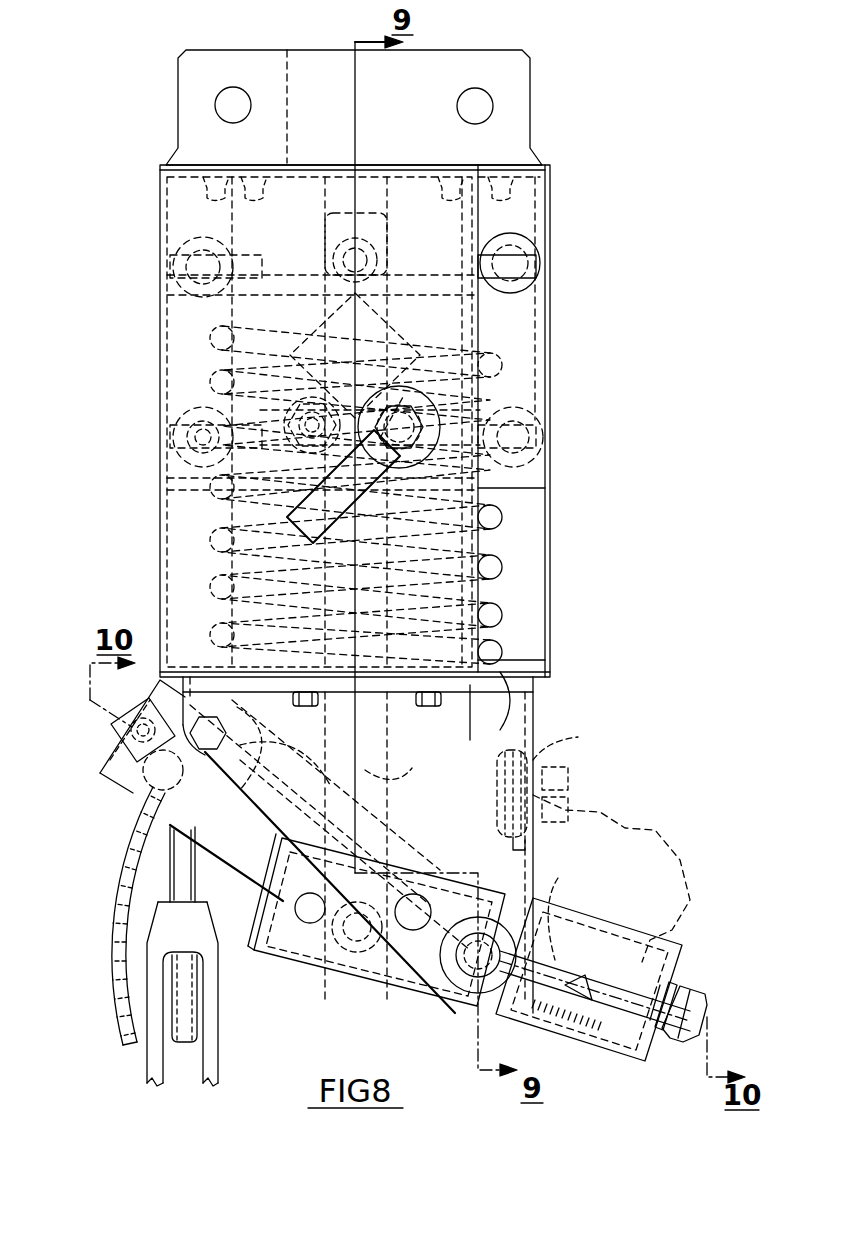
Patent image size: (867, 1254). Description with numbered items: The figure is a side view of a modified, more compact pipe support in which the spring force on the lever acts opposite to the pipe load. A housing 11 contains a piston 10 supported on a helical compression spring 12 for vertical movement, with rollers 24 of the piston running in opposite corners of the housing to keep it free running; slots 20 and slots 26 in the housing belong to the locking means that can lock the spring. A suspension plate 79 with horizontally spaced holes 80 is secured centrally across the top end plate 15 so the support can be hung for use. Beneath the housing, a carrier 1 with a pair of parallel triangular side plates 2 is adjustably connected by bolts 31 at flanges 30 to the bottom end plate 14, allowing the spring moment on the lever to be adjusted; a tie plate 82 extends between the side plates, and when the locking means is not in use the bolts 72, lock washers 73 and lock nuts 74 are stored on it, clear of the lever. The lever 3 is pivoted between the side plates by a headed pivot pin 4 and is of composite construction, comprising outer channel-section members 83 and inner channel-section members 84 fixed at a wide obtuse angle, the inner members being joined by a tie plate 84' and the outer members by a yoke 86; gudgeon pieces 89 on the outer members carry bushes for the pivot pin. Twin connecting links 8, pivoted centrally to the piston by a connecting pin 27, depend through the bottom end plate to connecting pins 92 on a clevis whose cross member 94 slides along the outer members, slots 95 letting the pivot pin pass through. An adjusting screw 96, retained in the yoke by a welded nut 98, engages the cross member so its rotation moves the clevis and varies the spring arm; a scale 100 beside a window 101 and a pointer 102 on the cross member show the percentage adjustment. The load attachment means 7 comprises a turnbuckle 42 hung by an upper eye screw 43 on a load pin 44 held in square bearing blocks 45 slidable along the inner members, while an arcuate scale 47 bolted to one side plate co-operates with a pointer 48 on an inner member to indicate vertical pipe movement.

The carrier 1 is at (548, 710).
The side plates 2 is at (447, 747).
The lever 3 is at (132, 818).
The pivot pin 4 is at (452, 1010).
The load attachment means 7 is at (128, 950).
The connecting links 8 is at (399, 763).
The piston 10 is at (515, 348).
The housing 11 is at (552, 545).
The helical compression spring 12 is at (492, 652).
The bottom end plate 14 is at (497, 706).
The top end plate 15 is at (530, 173).
The slots 20 is at (283, 520).
The rollers 24 is at (178, 266).
The slots 26 is at (252, 372).
The connecting pin 27 is at (378, 258).
The flanges 30 is at (475, 690).
The bolts 31 is at (318, 700).
The turnbuckle 42 is at (220, 982).
The upper eye screw 43 is at (183, 870).
The load pin 44 is at (105, 783).
The square bearing blocks 45 is at (270, 760).
The arcuate scale 47 is at (128, 918).
The pointer 48 is at (120, 738).
The bolts 72 is at (575, 778).
The lock washers 73 is at (572, 800).
The lock nuts 74 is at (495, 800).
The suspension plate 79 is at (380, 106).
The holes 80 is at (240, 103).
The tie plate 82 is at (571, 741).
The outer channel-section members 83 is at (626, 940).
The inner channel-section members 84 is at (121, 787).
The tie plate 84' is at (232, 717).
The yoke 86 is at (662, 982).
The gudgeon pieces 89 is at (492, 912).
The connecting pins 92 is at (300, 965).
The cross member 94 is at (611, 878).
The slots 95 is at (372, 985).
The adjusting screw 96 is at (705, 1012).
The nut 98 is at (673, 992).
The scale 100 is at (597, 1035).
The window 101 is at (615, 1040).
The pointer 102 is at (572, 975).